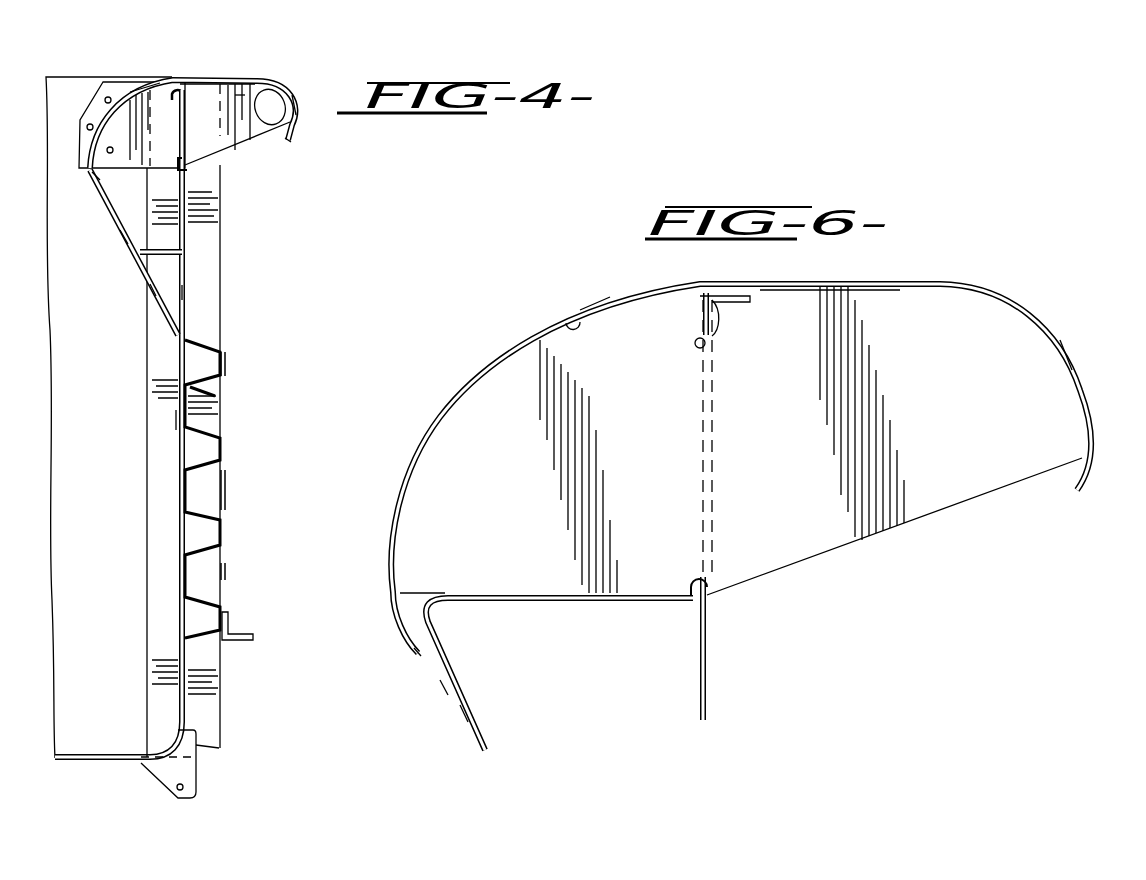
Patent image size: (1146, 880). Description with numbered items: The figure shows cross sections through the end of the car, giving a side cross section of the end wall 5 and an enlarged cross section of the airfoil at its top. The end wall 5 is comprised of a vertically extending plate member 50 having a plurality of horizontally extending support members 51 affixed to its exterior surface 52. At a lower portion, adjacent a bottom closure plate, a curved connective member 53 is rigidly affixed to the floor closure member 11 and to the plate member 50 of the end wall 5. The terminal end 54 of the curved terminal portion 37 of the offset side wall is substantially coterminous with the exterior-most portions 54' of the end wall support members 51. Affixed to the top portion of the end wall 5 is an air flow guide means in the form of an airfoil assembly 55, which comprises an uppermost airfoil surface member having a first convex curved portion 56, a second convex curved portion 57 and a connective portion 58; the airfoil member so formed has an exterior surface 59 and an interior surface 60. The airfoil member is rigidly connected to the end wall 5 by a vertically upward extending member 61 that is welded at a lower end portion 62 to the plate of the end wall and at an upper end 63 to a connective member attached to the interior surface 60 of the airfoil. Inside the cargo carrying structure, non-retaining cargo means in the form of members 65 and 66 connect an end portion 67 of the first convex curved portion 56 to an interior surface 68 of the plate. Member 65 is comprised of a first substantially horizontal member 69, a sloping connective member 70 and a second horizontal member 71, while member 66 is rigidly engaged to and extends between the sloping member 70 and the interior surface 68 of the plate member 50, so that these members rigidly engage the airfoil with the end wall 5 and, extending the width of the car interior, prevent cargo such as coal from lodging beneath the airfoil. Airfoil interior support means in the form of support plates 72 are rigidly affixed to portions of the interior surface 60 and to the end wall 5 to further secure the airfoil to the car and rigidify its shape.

In FIG. 4, the end wall 5 is at (183, 292).
In FIG. 4, the floor closure member 11 is at (85, 757).
In FIG. 4, the curved terminal portion 37 is at (197, 203).
In FIG. 4, the plate member 50 is at (190, 417).
In FIG. 6, the plate member 50 is at (708, 677).
In FIG. 4, the support members 51 is at (203, 347).
In FIG. 4, the exterior surface 52 is at (197, 395).
In FIG. 4, the curved connective member 53 is at (187, 760).
In FIG. 4, the terminal end 54 is at (258, 456).
In FIG. 4, the exterior-most portions 54' is at (256, 451).
In FIG. 4, the airfoil assembly 55 is at (256, 72).
In FIG. 4, the first convex curved portion 56 is at (123, 97).
In FIG. 6, the first convex curved portion 56 is at (487, 373).
In FIG. 4, the second convex curved portion 57 is at (297, 107).
In FIG. 6, the second convex curved portion 57 is at (1065, 343).
In FIG. 4, the connective portion 58 is at (207, 80).
In FIG. 6, the connective portion 58 is at (807, 280).
In FIG. 4, the exterior surface 59 is at (167, 80).
In FIG. 6, the exterior surface 59 is at (607, 300).
In FIG. 4, the interior surface 60 is at (288, 121).
In FIG. 6, the interior surface 60 is at (570, 322).
In FIG. 4, the vertically upward extending member 61 is at (192, 134).
In FIG. 6, the vertically upward extending member 61 is at (713, 553).
In FIG. 4, the lower end portion 62 is at (188, 157).
In FIG. 6, the lower end portion 62 is at (710, 587).
In FIG. 4, the upper end 63 is at (193, 84).
In FIG. 6, the upper end 63 is at (720, 300).
In FIG. 4, the non-retaining cargo member 65 is at (120, 213).
In FIG. 6, the non-retaining cargo member 65 is at (463, 715).
In FIG. 4, the non-retaining cargo member 66 is at (157, 288).
In FIG. 4, the end portion 67 is at (97, 177).
In FIG. 6, the end portion 67 is at (415, 650).
In FIG. 4, the interior surface 68 is at (177, 420).
In FIG. 4, the first substantially horizontal member 69 is at (125, 166).
In FIG. 6, the first substantially horizontal member 69 is at (582, 597).
In FIG. 4, the sloping connective member 70 is at (123, 235).
In FIG. 6, the sloping connective member 70 is at (443, 687).
In FIG. 4, the second horizontal member 71 is at (157, 253).
In FIG. 4, the support plates 72 is at (240, 153).